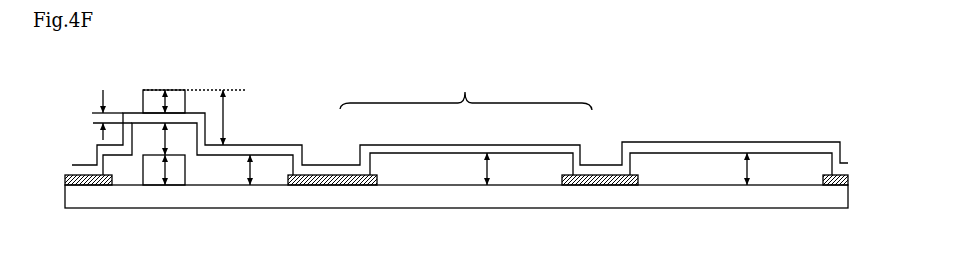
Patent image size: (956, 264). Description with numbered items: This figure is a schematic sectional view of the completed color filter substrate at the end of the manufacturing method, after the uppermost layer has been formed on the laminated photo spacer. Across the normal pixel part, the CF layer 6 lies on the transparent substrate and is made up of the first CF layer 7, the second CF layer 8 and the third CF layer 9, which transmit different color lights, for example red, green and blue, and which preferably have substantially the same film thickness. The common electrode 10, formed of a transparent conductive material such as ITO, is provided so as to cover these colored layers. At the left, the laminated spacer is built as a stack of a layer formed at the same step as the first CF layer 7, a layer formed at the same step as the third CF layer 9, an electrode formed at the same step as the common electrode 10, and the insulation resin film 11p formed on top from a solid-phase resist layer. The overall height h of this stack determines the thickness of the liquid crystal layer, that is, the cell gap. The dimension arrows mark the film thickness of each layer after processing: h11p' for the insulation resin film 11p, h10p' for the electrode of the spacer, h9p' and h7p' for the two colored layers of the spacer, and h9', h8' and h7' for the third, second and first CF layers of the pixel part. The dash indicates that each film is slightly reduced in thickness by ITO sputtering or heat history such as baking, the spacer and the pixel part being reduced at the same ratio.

The CF layer 6 is at (466, 85).
The first CF layer 7 is at (658, 167).
The second CF layer 8 is at (440, 163).
The third CF layer 9 is at (235, 160).
The common electrode 10 is at (737, 148).
The insulation resin film 11p is at (153, 97).
The height of the laminated PS h is at (195, 117).
The film thickness of the insulation resin film 11p after thickness reduction h11p' is at (211, 80).
The film thickness of the common electrode 10p after thickness reduction h10p' is at (84, 115).
The film thickness of the CF layer 9p after thickness reduction h9p' is at (212, 186).
The film thickness of the CF layer 7p after thickness reduction h7p' is at (141, 202).
The film thickness of the third CF layer after thickness reduction h9' is at (268, 170).
The film thickness of the second CF layer after thickness reduction h8' is at (508, 169).
The film thickness of the first CF layer after thickness reduction h7' is at (772, 169).